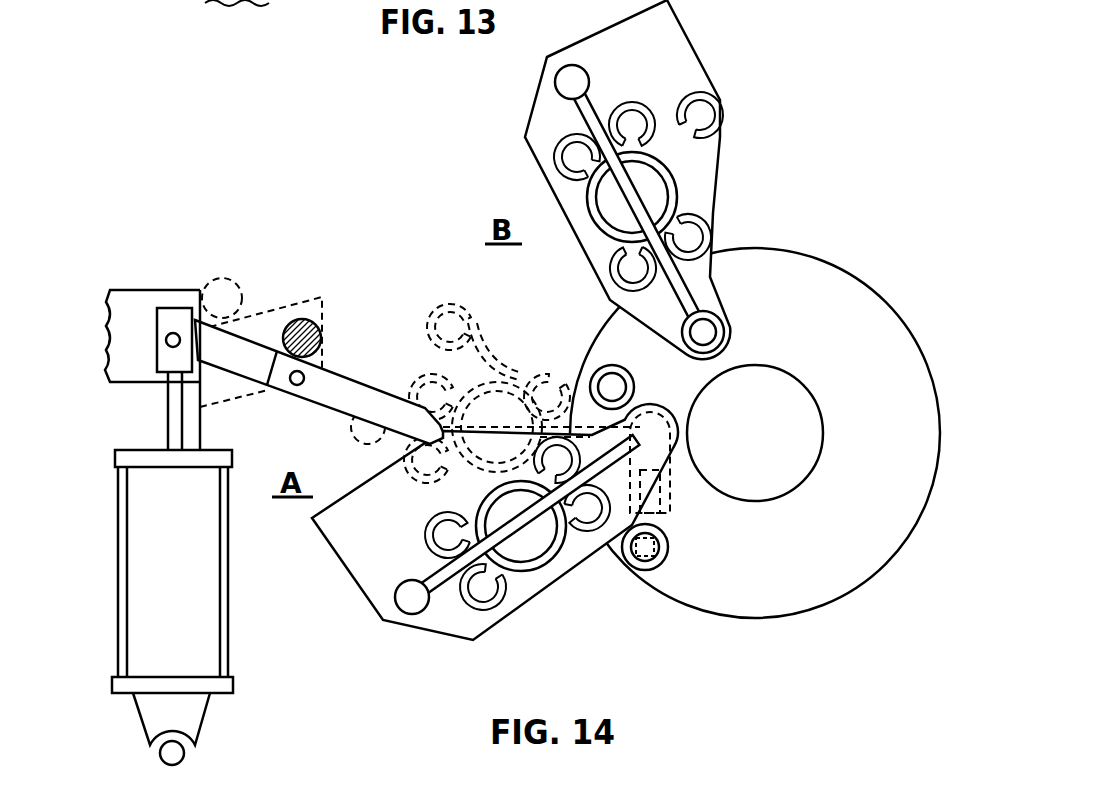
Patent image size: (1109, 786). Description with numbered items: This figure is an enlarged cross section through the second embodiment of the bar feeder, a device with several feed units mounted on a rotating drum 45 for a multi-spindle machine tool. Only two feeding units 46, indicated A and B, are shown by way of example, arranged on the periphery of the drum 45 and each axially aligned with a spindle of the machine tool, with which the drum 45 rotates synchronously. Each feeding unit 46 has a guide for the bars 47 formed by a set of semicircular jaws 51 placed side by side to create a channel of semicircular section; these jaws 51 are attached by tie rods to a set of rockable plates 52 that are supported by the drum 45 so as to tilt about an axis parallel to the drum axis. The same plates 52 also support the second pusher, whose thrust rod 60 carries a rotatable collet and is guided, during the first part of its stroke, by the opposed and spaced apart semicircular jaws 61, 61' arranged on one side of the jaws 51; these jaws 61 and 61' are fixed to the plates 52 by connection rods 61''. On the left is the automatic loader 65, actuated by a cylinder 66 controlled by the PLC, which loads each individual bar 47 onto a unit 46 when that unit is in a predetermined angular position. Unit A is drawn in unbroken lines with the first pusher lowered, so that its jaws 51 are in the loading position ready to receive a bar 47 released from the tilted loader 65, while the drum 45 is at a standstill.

The rotating drum 45 is at (812, 277).
The feeding unit 46 is at (530, 350).
The bar 47 is at (318, 322).
The semicircular jaws 51 is at (688, 152).
The reciprocable plates 52 is at (673, 50).
The thrust rod 60 is at (525, 543).
The semicircular jaw 61 is at (452, 524).
The semicircular jaw 61' is at (531, 561).
The connection rods 61'' is at (381, 556).
The automatic loader 65 is at (243, 357).
The cylinder 66 is at (197, 630).